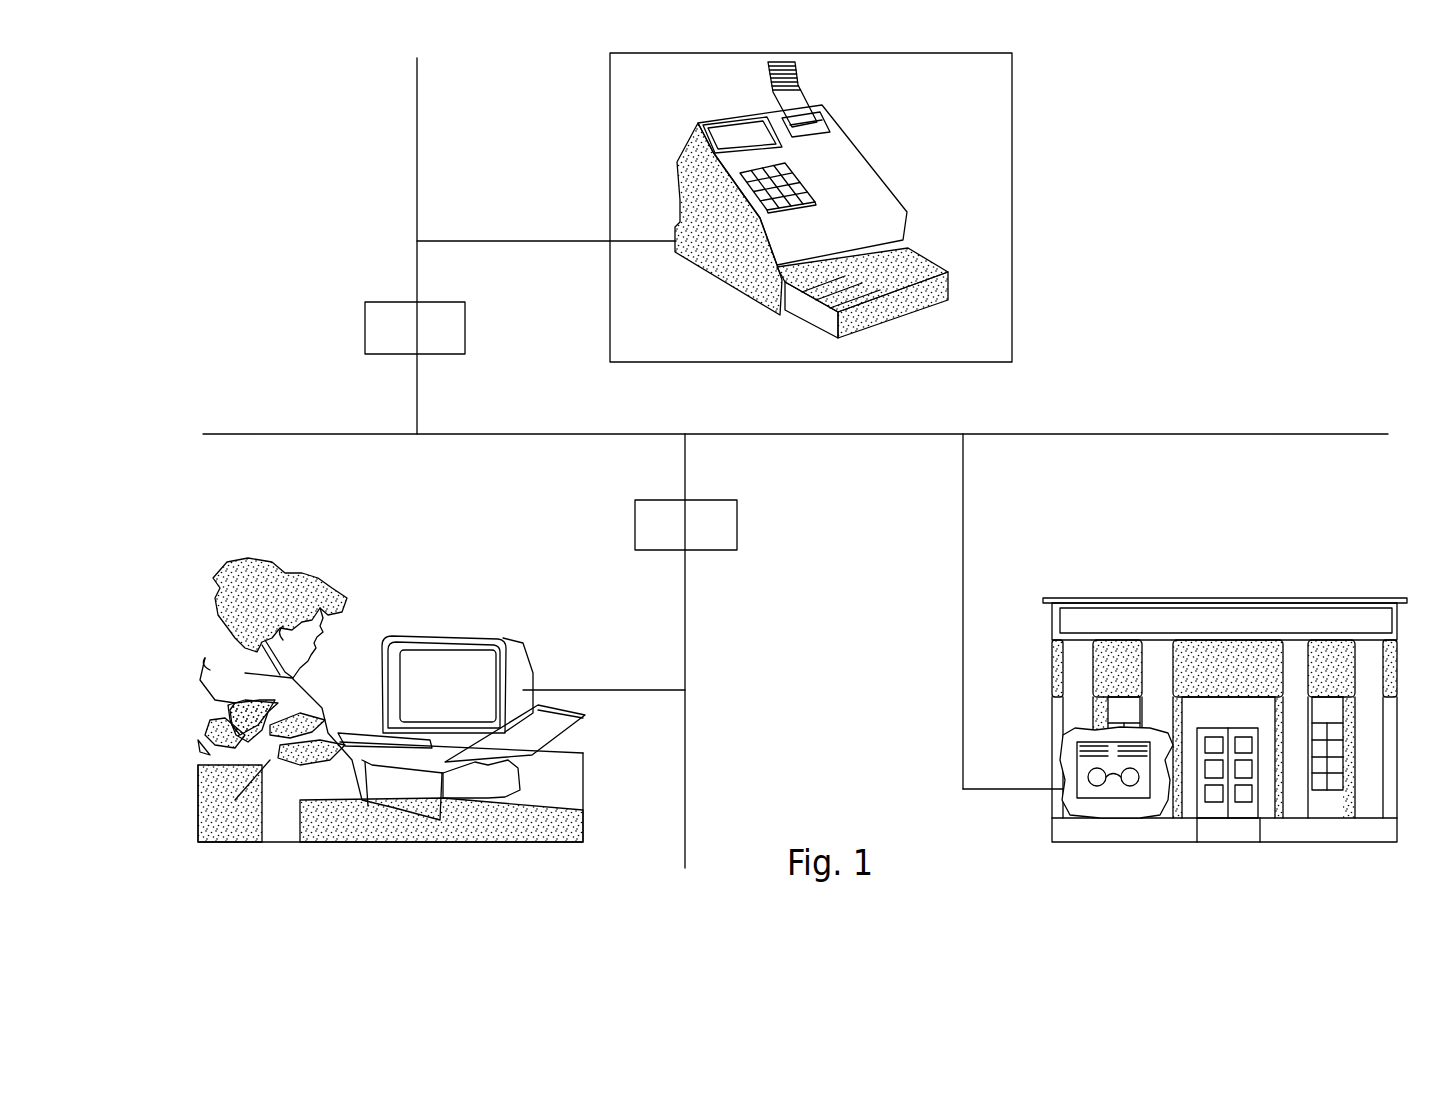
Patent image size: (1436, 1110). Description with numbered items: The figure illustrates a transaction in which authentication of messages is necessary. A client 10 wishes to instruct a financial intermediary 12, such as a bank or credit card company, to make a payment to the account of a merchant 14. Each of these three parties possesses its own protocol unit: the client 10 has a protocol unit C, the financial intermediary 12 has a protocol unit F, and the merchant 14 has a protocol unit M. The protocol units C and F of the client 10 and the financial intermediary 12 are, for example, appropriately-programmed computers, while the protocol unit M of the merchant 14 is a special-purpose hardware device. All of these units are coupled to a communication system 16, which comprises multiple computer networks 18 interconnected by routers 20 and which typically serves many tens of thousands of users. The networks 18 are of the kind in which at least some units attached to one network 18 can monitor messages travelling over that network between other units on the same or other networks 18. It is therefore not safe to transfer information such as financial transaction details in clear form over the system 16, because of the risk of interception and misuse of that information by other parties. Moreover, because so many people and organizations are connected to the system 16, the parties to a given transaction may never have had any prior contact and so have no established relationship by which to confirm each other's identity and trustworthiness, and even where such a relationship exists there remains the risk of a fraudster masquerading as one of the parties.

The client 10 is at (328, 582).
The financial intermediary 12 is at (1263, 598).
The merchant 14 is at (1012, 193).
The communication system 16 is at (822, 492).
The computer networks 18 is at (417, 162).
The routers 20 is at (365, 313).
The protocol unit M is at (877, 173).
The protocol unit C is at (500, 637).
The protocol unit F is at (1092, 763).